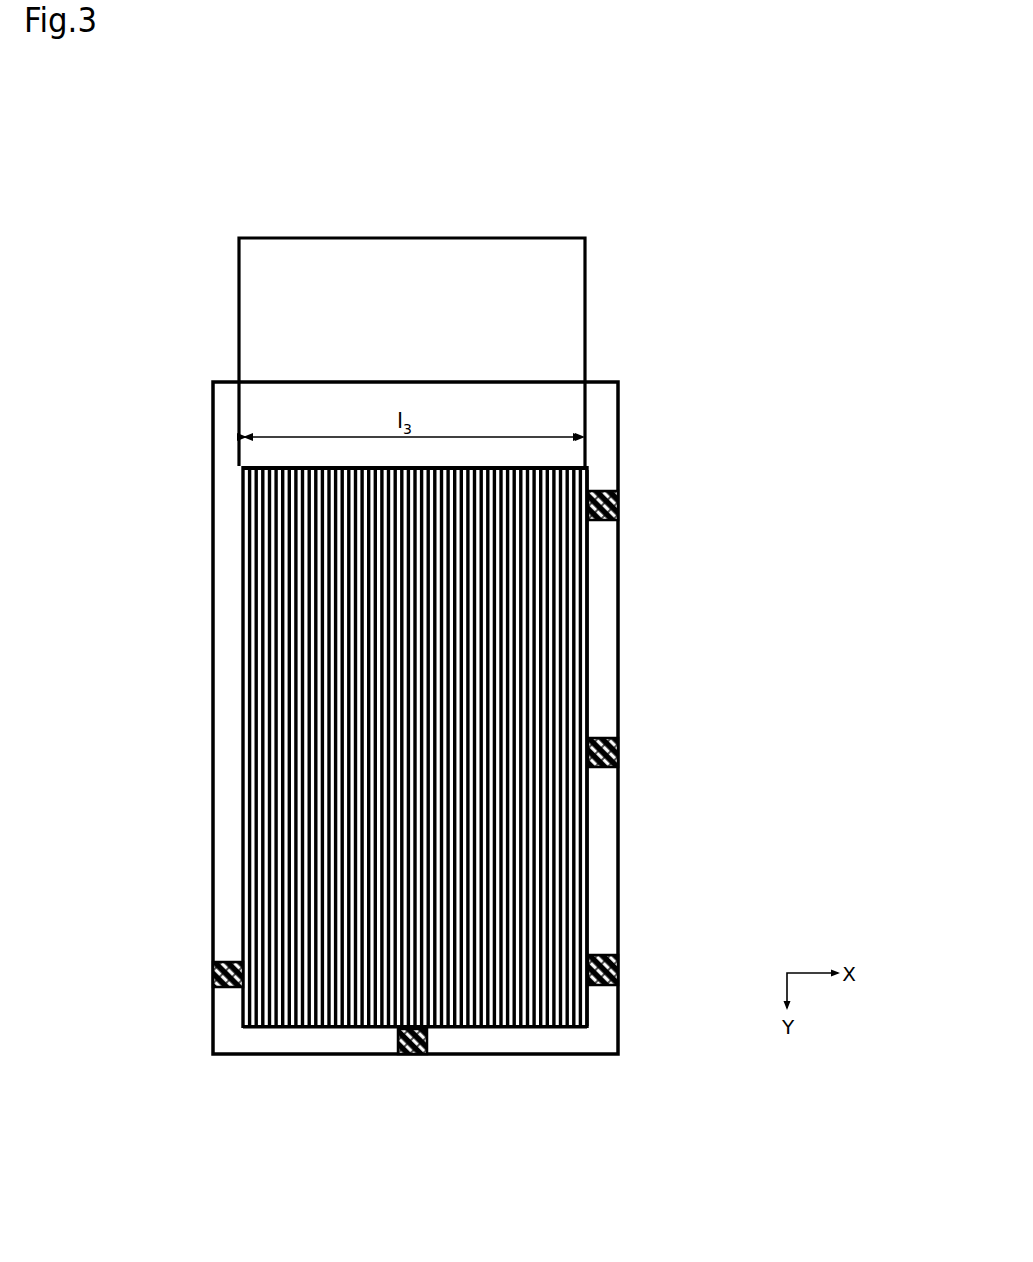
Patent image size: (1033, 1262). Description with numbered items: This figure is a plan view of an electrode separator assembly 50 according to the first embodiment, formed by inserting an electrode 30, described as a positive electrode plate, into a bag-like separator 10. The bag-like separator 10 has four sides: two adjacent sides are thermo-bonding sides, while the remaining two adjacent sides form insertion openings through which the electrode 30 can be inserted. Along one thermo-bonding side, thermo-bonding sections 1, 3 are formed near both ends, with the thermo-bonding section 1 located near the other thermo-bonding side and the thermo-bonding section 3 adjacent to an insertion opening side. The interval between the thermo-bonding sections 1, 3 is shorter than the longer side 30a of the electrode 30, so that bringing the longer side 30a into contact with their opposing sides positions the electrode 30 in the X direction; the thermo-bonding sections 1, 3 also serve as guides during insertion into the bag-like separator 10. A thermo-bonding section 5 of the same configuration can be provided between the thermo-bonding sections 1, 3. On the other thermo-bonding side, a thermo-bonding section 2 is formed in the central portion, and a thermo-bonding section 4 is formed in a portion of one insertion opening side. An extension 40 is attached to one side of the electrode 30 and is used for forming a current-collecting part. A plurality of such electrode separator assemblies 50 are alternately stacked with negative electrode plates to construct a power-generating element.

The thermo-bonding section 1 is at (618, 962).
The thermo-bonding section 2 is at (407, 1056).
The thermo-bonding section 3 is at (618, 500).
The thermo-bonding section 4 is at (215, 975).
The thermo-bonding section 5 is at (618, 752).
The bag-like separator 10 is at (242, 1066).
The electrode 30 is at (543, 620).
The longer side of electrode 30a is at (587, 472).
The extension 40 is at (508, 265).
The electrode separator assembly 50 is at (661, 1143).